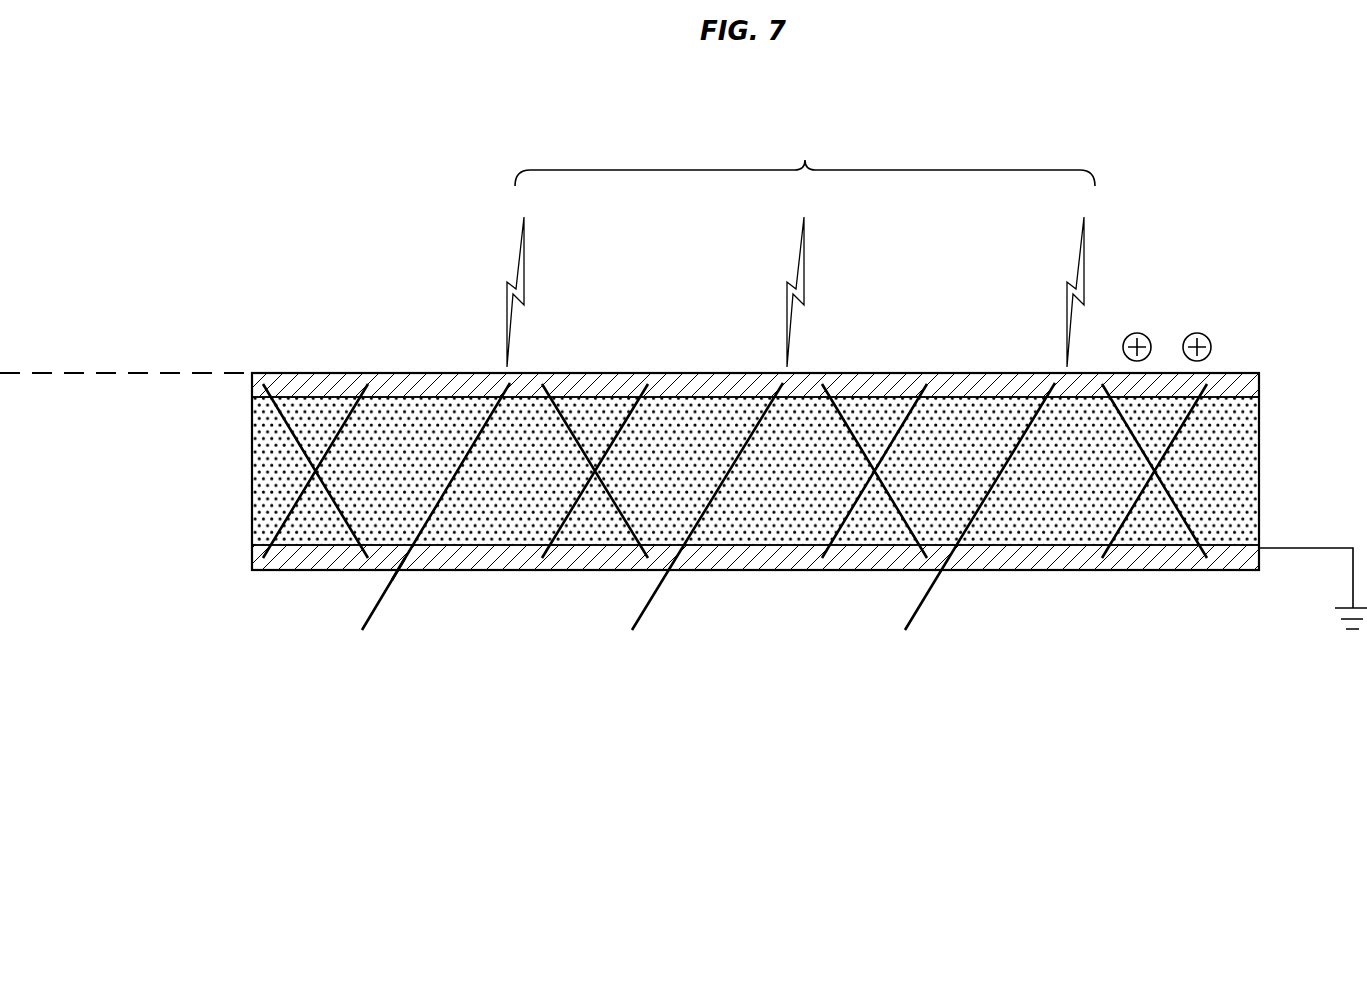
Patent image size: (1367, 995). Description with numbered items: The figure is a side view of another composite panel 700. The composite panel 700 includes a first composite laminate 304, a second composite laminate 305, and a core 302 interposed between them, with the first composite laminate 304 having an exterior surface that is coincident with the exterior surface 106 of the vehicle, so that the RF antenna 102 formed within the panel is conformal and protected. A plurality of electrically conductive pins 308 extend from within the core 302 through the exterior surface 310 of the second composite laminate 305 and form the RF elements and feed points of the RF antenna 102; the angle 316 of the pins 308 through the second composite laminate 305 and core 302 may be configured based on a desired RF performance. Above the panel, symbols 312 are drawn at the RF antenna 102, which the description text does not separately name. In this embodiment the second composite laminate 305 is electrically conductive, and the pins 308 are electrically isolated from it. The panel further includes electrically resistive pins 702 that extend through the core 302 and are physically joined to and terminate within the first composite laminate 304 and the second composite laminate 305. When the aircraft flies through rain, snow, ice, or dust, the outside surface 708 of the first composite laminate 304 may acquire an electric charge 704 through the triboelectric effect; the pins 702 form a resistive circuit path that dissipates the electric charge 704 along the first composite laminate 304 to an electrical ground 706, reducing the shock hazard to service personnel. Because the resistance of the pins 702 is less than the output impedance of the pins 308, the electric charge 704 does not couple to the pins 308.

The composite panel 700 is at (288, 96).
The RF antenna 102 is at (762, 248).
The exterior surface 106 is at (108, 364).
The core 302 is at (270, 512).
The first composite laminate 304 is at (310, 372).
The second composite laminate 305 is at (255, 553).
The pins 308 is at (378, 607).
The exterior surface 310 is at (820, 601).
The incident light 312 is at (510, 288).
The angle 316 is at (402, 573).
The pins 702 is at (279, 406).
The electric charge 704 is at (1198, 332).
The electrical ground 706 is at (1318, 547).
The outside surface 708 is at (1257, 339).